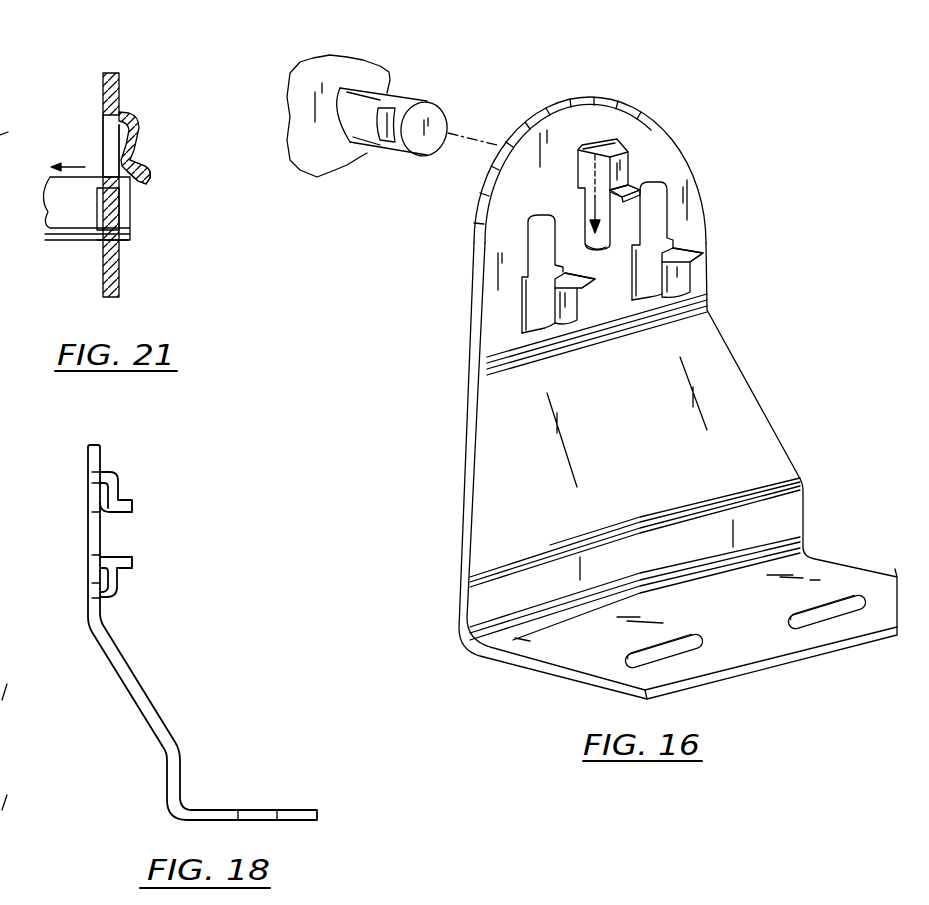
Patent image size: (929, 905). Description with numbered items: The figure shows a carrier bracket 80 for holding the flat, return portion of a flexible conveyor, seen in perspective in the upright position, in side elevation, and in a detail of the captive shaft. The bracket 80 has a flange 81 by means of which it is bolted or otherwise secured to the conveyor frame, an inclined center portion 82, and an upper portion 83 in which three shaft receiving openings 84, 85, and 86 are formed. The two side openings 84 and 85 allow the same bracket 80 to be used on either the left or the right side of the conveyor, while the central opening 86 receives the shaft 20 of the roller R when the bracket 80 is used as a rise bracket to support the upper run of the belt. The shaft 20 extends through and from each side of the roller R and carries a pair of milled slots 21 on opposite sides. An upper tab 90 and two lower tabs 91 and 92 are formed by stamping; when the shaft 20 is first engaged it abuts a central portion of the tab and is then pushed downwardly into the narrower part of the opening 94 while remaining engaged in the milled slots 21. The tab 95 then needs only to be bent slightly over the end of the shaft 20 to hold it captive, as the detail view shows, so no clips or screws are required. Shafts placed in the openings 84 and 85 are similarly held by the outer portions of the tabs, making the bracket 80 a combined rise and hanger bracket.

In FIG. 16, the shaft 20 is at (437, 110).
In FIG. 21, the shaft 20 is at (132, 226).
In FIG. 16, the milled slots 21 is at (397, 102).
In FIG. 21, the milled slots 21 is at (122, 222).
In FIG. 16, the bracket 80 is at (747, 373).
In FIG. 21, the bracket 80 is at (113, 72).
In FIG. 18, the bracket 80 is at (149, 720).
In FIG. 16, the flange 81 is at (800, 572).
In FIG. 18, the flange 81 is at (300, 808).
In FIG. 16, the inclined center portion 82 is at (710, 427).
In FIG. 18, the inclined center portion 82 is at (138, 673).
In FIG. 16, the upper portion 83 is at (561, 130).
In FIG. 18, the upper portion 83 is at (88, 527).
In FIG. 16, the shaft receiving opening 84 is at (538, 252).
In FIG. 16, the shaft receiving opening 85 is at (657, 208).
In FIG. 16, the central opening 86 is at (578, 203).
In FIG. 21, the central opening 86 is at (112, 149).
In FIG. 16, the upper tab 90 is at (625, 158).
In FIG. 21, the upper tab 90 is at (141, 128).
In FIG. 18, the upper tab 90 is at (118, 480).
In FIG. 16, the lower tab 91 is at (573, 322).
In FIG. 18, the lower tab 91 is at (118, 586).
In FIG. 16, the lower tab 92 is at (690, 274).
In FIG. 16, the narrower part of the opening 94 is at (603, 247).
In FIG. 21, the narrower part of the opening 94 is at (100, 240).
In FIG. 16, the tab 95 is at (641, 184).
In FIG. 21, the tab 95 is at (152, 168).
In FIG. 18, the tab 95 is at (133, 503).
In FIG. 16, the roller R is at (350, 86).